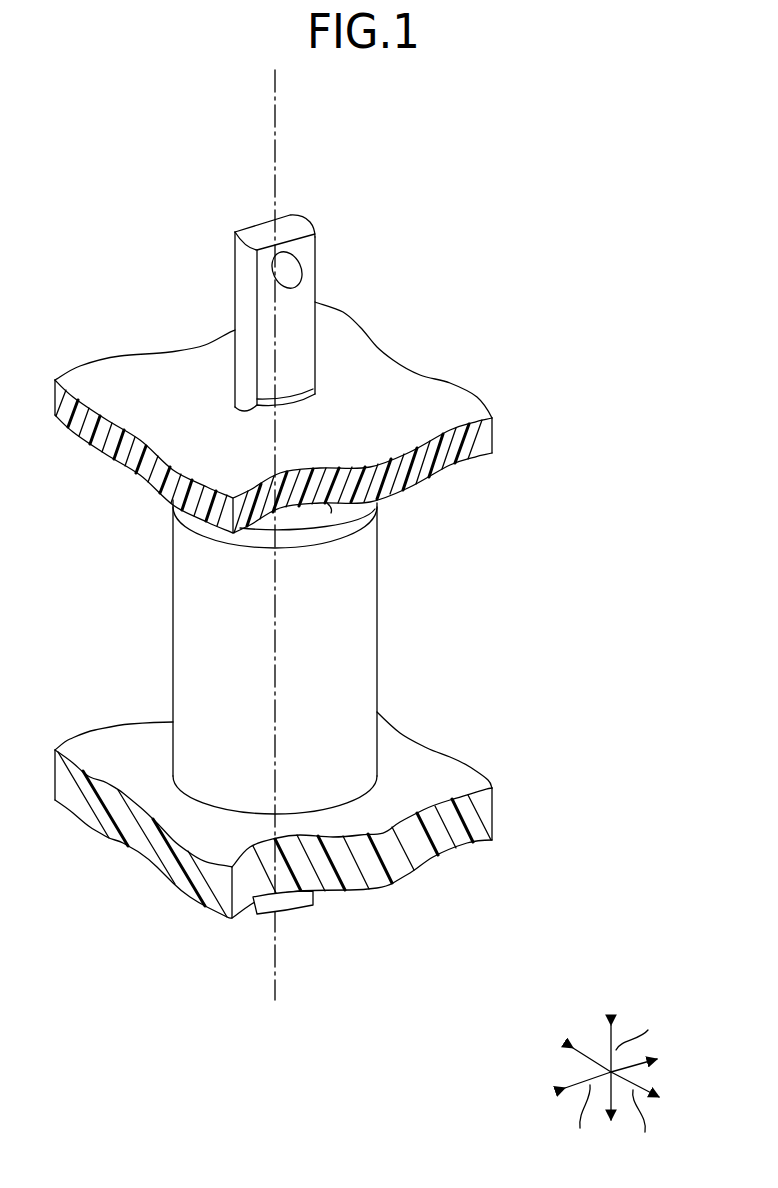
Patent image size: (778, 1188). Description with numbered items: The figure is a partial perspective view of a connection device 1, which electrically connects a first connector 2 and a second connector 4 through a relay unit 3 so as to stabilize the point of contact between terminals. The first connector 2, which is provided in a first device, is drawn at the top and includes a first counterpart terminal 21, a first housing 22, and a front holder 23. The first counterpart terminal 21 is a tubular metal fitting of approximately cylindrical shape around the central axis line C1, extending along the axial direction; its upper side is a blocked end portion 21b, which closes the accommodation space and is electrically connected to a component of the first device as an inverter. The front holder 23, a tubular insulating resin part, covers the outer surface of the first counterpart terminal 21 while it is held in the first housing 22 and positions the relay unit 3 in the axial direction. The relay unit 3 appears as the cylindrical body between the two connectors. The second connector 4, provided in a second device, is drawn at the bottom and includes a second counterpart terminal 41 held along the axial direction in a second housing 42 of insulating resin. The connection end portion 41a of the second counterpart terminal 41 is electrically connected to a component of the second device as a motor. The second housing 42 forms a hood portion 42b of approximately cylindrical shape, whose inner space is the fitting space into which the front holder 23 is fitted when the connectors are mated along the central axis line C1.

The connection device 1 is at (626, 868).
The first connector 2 is at (596, 252).
The first counterpart terminal 21 is at (351, 313).
The blocked end portion 21b is at (290, 307).
The first housing 22 is at (398, 355).
The front holder 23 is at (314, 524).
The relay unit 3 is at (358, 617).
The second connector 4 is at (596, 758).
The second counterpart terminal 41 is at (400, 950).
The connection end portion 41a is at (262, 910).
The second housing 42 is at (328, 788).
The hood portion 42b is at (170, 658).
The central axis line C1 is at (276, 143).